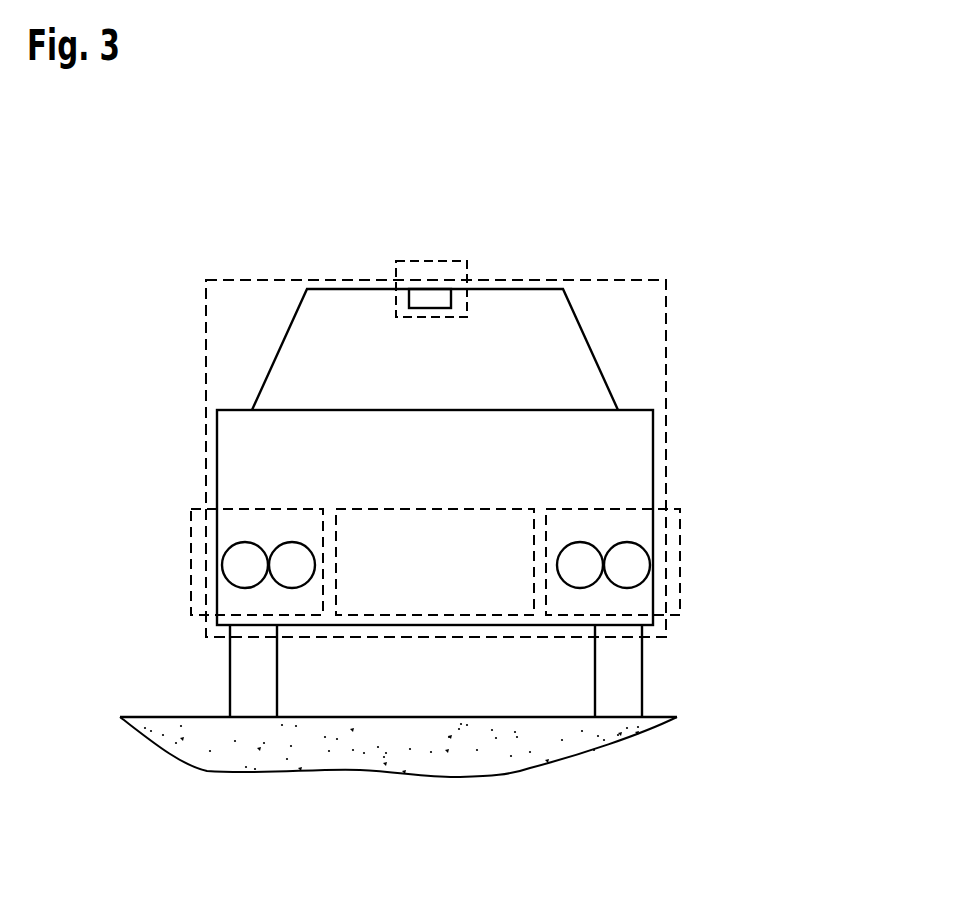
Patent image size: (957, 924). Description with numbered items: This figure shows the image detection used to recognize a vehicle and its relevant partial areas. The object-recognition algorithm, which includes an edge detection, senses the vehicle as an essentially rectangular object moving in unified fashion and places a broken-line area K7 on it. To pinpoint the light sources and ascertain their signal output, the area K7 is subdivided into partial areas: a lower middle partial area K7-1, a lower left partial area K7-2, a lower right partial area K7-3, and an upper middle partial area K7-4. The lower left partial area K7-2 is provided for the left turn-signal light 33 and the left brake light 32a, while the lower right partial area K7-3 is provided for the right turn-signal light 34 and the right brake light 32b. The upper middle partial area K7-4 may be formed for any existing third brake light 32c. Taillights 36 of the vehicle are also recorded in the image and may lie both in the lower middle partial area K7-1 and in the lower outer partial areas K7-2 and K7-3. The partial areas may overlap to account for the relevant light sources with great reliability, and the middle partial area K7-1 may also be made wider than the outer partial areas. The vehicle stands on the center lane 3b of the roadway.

The area K7 is at (666, 373).
The lower middle partial area K7-1 is at (436, 615).
The lower left partial area K7-2 is at (191, 518).
The lower right partial area K7-3 is at (680, 517).
The upper middle partial area K7-4 is at (466, 262).
The left brake light 32a is at (295, 577).
The right brake light 32b is at (580, 573).
The third brake light 32c is at (425, 300).
The left turn-signal light 33 is at (237, 578).
The right turn-signal light 34 is at (632, 575).
The taillight 36 is at (237, 563).
The center lane 3b is at (173, 717).